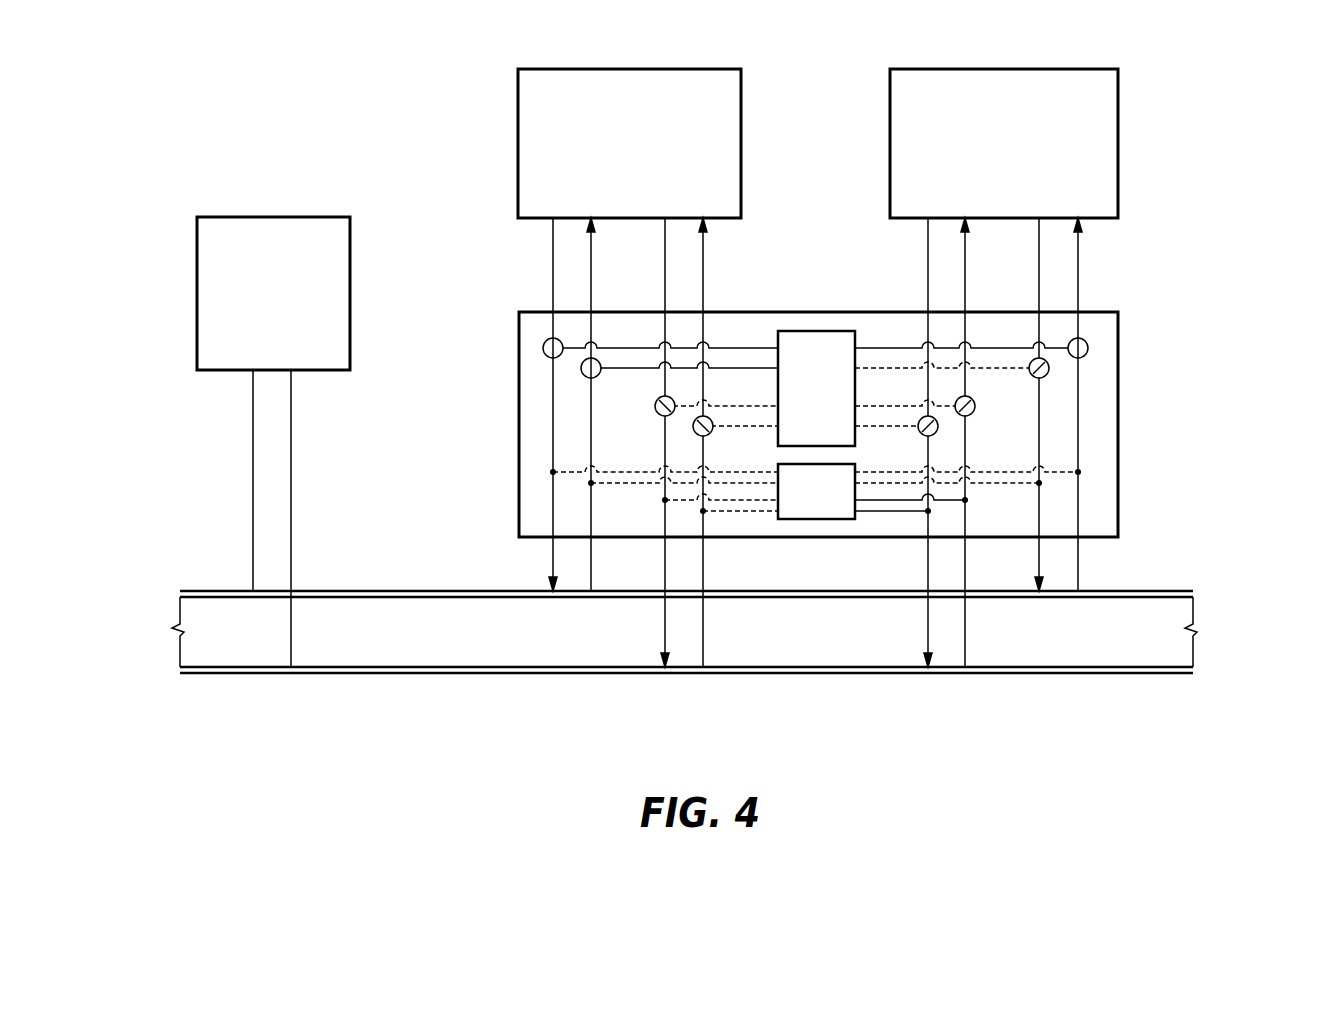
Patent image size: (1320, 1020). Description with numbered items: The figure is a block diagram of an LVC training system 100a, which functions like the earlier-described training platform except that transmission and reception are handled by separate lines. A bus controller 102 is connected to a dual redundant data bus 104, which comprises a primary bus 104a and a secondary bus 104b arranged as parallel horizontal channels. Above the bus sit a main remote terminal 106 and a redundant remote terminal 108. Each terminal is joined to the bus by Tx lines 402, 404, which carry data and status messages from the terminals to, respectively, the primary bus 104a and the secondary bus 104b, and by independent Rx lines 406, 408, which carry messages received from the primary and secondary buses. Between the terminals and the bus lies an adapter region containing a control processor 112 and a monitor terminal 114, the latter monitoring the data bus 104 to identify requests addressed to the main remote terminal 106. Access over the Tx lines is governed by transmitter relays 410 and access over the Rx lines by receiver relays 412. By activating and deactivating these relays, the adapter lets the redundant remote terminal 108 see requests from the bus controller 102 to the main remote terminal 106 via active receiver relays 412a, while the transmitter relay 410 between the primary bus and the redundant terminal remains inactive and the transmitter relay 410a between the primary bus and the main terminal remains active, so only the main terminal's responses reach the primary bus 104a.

The LVC training system 100a is at (175, 100).
The bus controller 102 is at (256, 322).
The dual redundant data bus 104 is at (723, 635).
The primary bus 104a is at (352, 591).
The secondary bus 104b is at (480, 674).
The main remote terminal 106 is at (613, 172).
The redundant remote terminal 108 is at (987, 172).
The control processor 112 is at (799, 404).
The monitor terminal 114 is at (799, 507).
The Tx line 402 is at (553, 262).
The Tx line 404 is at (591, 300).
The Rx line 406 is at (703, 262).
The Rx line 408 is at (665, 302).
The transmitter relay 410 is at (656, 411).
The active transmitter relay 410a is at (544, 351).
The receiver relay 412 is at (1047, 376).
The active receiver relay 412a is at (582, 374).